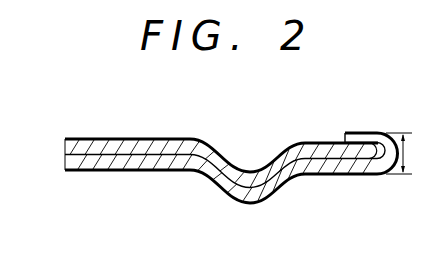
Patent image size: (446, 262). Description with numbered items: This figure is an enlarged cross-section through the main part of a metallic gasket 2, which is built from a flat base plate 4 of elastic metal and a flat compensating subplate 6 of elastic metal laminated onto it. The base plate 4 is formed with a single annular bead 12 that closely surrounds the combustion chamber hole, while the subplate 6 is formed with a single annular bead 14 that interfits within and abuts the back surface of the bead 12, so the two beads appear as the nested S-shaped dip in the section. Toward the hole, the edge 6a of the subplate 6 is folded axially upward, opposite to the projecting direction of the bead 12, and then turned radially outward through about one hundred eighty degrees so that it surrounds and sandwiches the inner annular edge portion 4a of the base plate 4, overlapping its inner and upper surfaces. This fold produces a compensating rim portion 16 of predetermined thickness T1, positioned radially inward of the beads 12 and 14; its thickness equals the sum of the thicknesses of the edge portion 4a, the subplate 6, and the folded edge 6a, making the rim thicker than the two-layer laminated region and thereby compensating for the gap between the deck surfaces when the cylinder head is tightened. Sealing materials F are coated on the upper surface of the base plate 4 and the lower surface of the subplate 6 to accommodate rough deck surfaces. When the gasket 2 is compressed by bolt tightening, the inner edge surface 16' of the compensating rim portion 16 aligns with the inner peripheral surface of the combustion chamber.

The metallic gasket 2 is at (116, 134).
The base plate 4 is at (140, 138).
The subplate 6 is at (141, 172).
The annular bead 12 is at (257, 170).
The annular bead 14 is at (253, 197).
The inner annular edge portion 4a is at (355, 155).
The edge 6a is at (363, 134).
The compensating rim portion 16 is at (390, 147).
The inner edge surface 16' is at (408, 131).
The thickness T1 is at (407, 153).
The sealing materials F is at (75, 135).